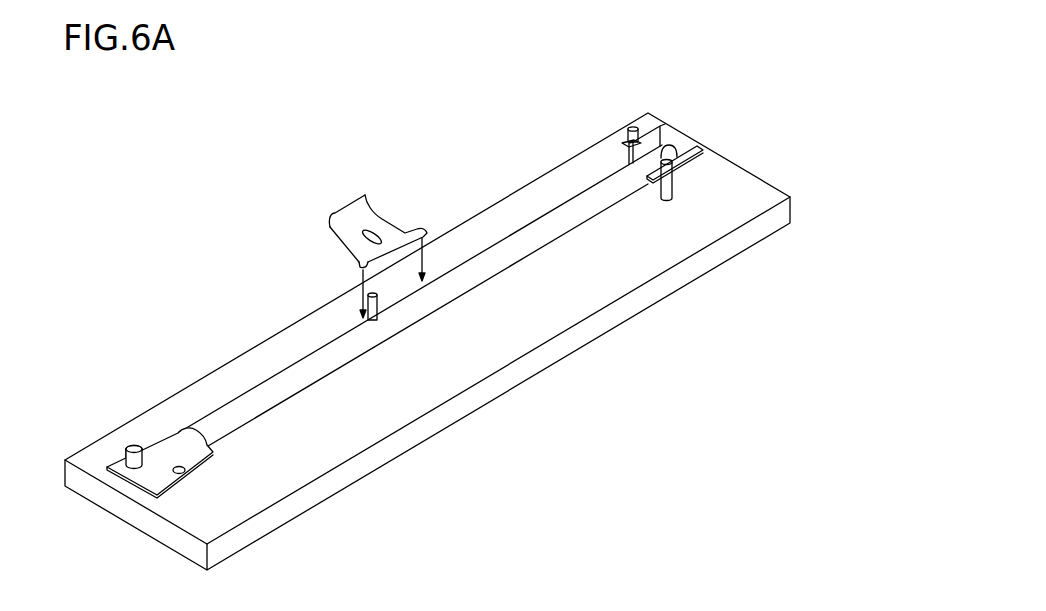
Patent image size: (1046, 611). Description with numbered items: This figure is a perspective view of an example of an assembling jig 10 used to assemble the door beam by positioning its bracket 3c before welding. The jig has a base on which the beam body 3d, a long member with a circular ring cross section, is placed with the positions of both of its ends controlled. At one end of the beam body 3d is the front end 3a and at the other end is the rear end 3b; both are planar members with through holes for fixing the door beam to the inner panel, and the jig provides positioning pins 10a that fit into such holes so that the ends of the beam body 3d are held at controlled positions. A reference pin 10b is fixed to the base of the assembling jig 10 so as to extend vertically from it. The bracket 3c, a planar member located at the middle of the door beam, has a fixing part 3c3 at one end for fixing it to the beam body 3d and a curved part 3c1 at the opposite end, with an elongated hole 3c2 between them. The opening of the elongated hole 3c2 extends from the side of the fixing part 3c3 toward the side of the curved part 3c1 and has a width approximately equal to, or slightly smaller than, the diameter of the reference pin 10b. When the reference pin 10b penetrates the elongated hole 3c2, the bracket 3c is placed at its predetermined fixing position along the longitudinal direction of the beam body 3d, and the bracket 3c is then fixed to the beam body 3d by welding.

The front end 3a is at (153, 482).
The rear end 3b is at (655, 132).
The bracket 3c is at (401, 216).
The curved part 3c1 is at (340, 210).
The elongated hole 3c2 is at (380, 236).
The fixing part 3c3 is at (362, 262).
The beam body 3d is at (295, 388).
The assembling jig 10 is at (580, 348).
The positioning pin 10a is at (132, 443).
The reference pin 10b is at (380, 306).